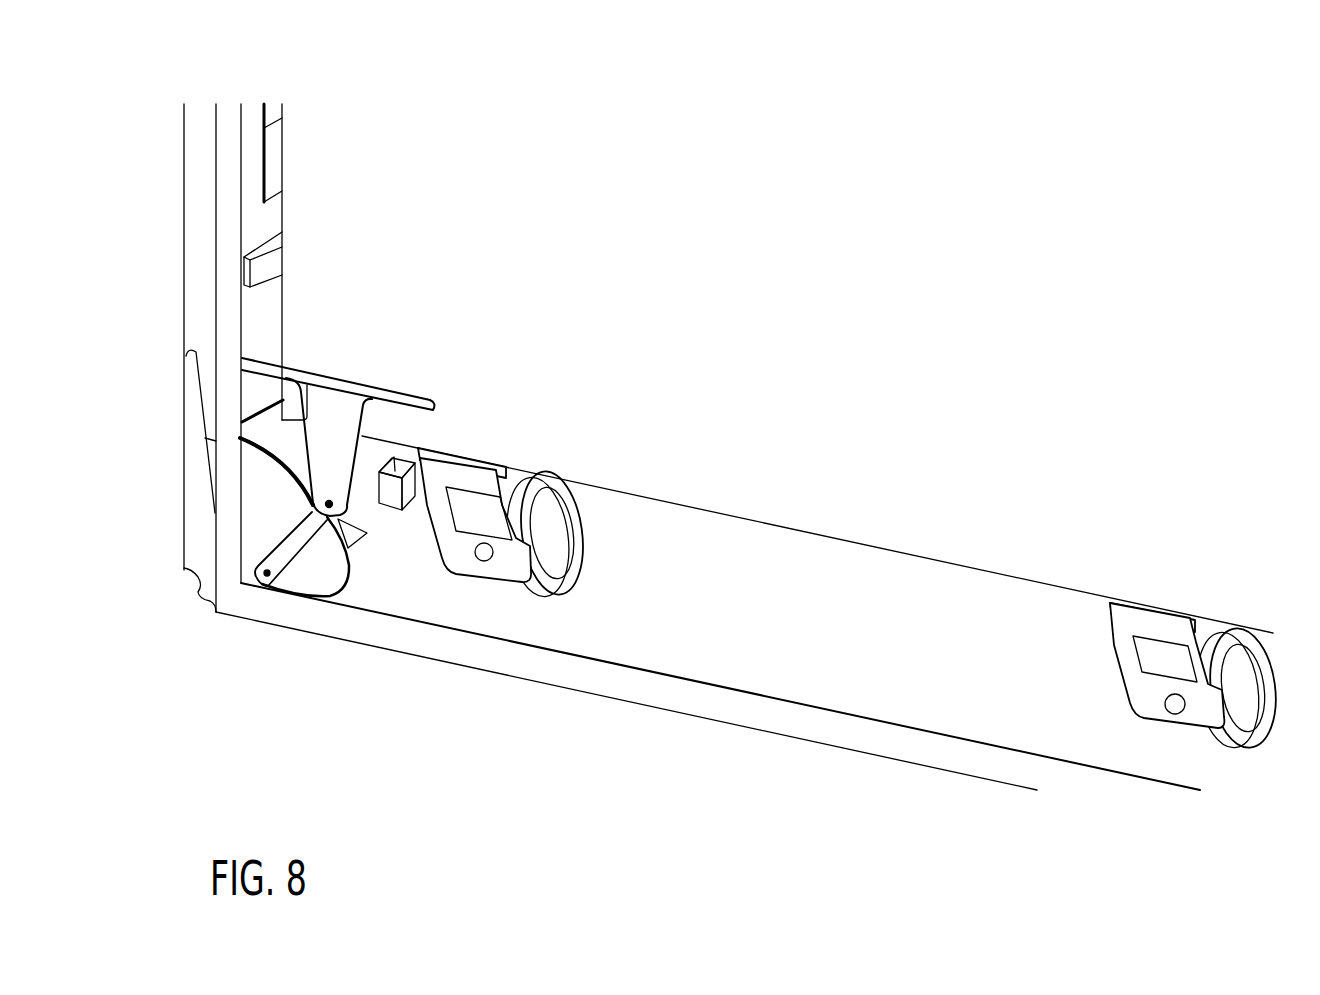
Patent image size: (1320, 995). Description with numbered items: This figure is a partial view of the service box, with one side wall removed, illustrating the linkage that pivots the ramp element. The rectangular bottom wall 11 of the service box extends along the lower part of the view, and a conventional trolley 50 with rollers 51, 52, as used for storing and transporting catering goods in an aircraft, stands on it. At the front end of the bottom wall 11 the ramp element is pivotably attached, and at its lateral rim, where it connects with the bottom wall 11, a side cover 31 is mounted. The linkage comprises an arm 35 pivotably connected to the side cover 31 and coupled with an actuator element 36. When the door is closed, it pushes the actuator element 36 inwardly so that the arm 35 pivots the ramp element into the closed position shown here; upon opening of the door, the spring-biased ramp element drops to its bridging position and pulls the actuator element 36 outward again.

The bottom wall 11 is at (702, 703).
The side cover 31 is at (258, 497).
The arm 35 is at (295, 578).
The actuator element 36 is at (327, 413).
The trolley 50 is at (857, 527).
The roller 51 is at (543, 585).
The roller 52 is at (1230, 737).